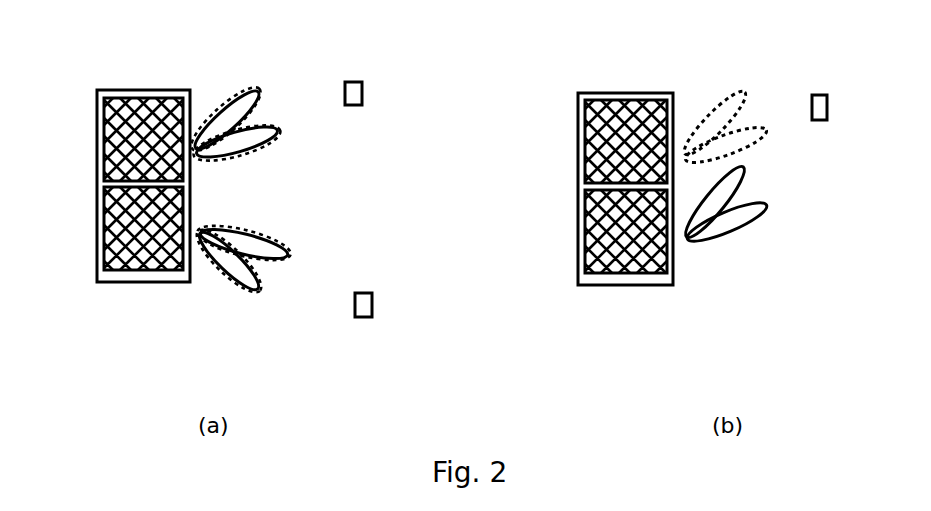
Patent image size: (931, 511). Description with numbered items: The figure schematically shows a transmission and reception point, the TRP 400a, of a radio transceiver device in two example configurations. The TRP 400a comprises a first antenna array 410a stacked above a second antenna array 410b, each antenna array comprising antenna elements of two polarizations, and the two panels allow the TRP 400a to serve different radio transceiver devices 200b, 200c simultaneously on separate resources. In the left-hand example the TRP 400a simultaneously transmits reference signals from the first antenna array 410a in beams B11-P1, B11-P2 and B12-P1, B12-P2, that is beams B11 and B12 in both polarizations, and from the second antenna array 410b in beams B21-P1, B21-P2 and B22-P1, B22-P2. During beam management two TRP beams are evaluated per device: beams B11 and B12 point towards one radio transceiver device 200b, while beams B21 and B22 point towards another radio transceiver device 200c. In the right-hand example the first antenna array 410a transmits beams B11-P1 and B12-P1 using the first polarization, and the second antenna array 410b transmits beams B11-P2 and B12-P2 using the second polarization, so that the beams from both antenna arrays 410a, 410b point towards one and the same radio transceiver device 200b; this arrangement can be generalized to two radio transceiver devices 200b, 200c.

The transmission and reception point (TRP) 400a is at (143, 282).
The first antenna array 410a is at (97, 138).
The second antenna array 410b is at (97, 230).
The radio transceiver device 200b is at (354, 82).
The radio transceiver device 200c is at (363, 317).
The beam B11 with polarization P1 B11-P1 is at (490, 96).
The beam B11 with polarization P2 B11-P2 is at (509, 152).
The beam B12 with polarization P1 B12-P1 is at (522, 145).
The beam B12 with polarization P2 B12-P2 is at (520, 183).
The beam B21 with polarization P1 B21-P1 is at (293, 243).
The beam B21 with polarization P2 B21-P2 is at (288, 248).
The beam B22 with polarization P1 B22-P1 is at (251, 279).
The beam B22 with polarization P2 B22-P2 is at (245, 292).